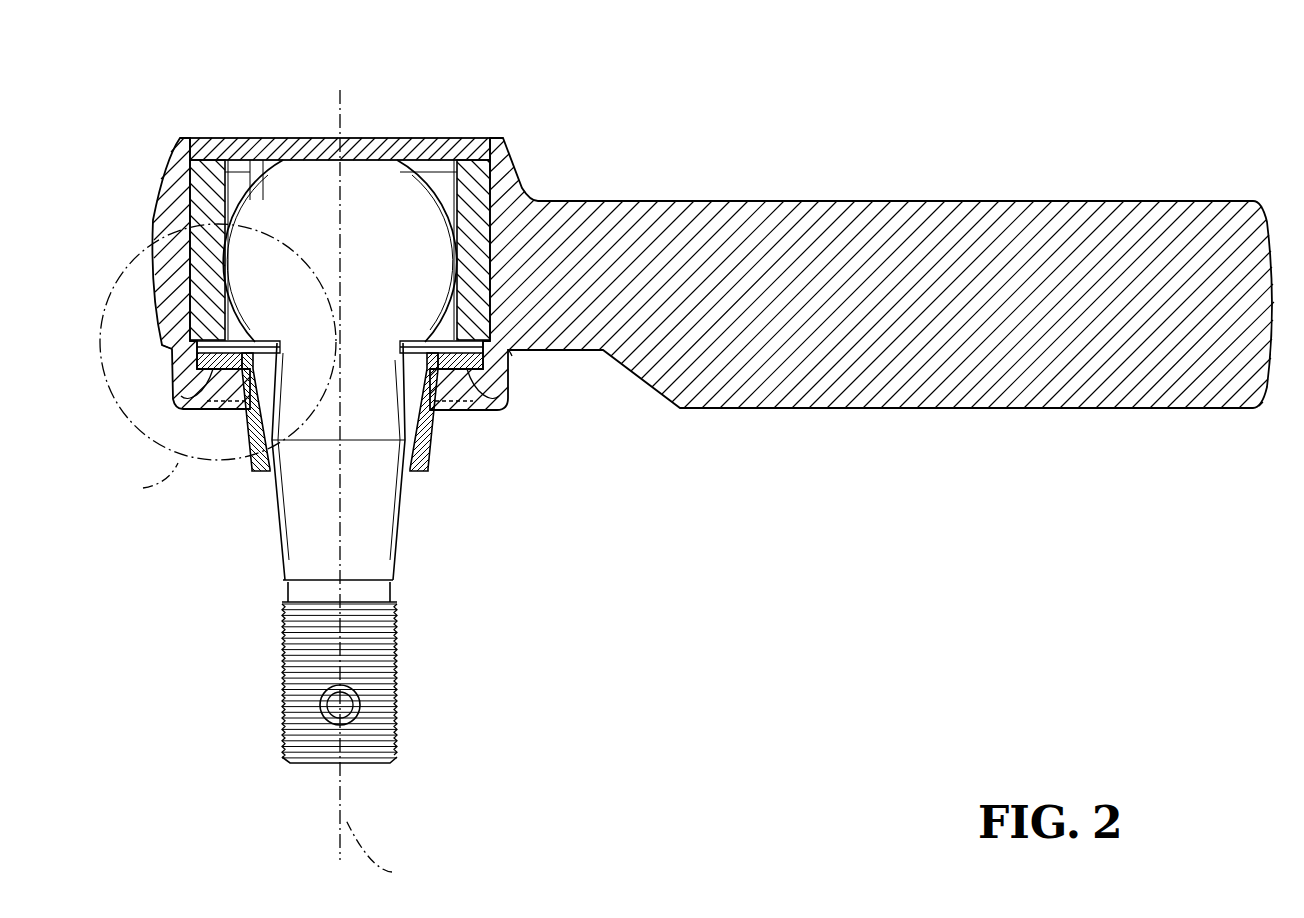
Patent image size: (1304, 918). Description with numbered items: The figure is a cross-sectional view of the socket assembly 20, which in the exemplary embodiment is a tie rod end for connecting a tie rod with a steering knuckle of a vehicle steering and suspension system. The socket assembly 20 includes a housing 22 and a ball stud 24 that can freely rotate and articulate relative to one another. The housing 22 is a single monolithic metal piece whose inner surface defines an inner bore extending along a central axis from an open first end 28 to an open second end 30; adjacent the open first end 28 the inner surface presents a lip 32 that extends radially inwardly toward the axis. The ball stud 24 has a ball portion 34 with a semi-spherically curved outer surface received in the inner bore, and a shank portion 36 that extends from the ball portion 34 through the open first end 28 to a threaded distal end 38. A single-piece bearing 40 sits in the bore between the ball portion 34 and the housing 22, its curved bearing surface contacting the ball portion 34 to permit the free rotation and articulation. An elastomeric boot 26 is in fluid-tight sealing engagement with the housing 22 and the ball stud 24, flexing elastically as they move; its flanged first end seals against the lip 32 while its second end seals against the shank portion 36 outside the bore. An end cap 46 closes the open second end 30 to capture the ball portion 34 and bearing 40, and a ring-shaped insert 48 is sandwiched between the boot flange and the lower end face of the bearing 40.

The socket assembly 20 is at (657, 451).
The housing 22 is at (830, 189).
The ball stud 24 is at (341, 559).
The boot 26 is at (247, 469).
The open first end 28 is at (483, 410).
The open second end 30 is at (462, 136).
The lip 32 is at (180, 392).
The ball portion 34 is at (368, 188).
The shank portion 36 is at (373, 543).
The threaded distal end 38 is at (397, 717).
The bearing 40 is at (477, 193).
The end cap 46 is at (233, 147).
The ring-shaped insert 48 is at (518, 345).